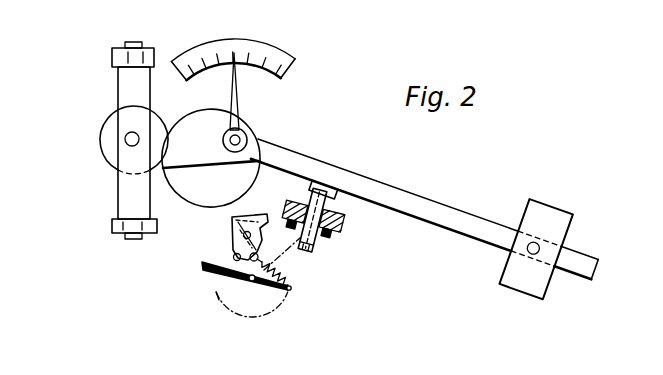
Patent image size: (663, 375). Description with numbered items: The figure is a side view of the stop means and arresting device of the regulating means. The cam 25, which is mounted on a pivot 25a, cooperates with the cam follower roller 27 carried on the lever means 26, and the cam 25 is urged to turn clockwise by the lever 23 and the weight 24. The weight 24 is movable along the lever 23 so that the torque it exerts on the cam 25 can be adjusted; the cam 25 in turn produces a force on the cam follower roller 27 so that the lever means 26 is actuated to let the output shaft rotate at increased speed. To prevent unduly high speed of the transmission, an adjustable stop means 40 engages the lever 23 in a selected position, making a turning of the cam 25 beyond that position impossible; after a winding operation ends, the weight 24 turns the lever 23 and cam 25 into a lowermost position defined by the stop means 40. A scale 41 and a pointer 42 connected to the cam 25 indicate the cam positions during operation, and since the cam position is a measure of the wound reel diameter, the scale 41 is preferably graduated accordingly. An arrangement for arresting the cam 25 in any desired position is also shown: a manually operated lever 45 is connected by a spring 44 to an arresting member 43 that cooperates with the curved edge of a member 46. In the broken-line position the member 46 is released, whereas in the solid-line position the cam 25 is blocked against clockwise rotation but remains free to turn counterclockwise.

The lever 23 is at (402, 197).
The weight 24 is at (555, 215).
The cam 25 is at (192, 120).
The pivot shaft 25a is at (240, 139).
The lever means 26 is at (166, 42).
The cam follower roller 27 is at (107, 117).
The adjustable stop means 40 is at (318, 250).
The scale 41 is at (287, 59).
The pointer 42 is at (240, 109).
The arresting member 43 is at (233, 221).
The spring 44 is at (282, 275).
The manually operated lever 45 is at (202, 270).
The member 46 is at (202, 187).